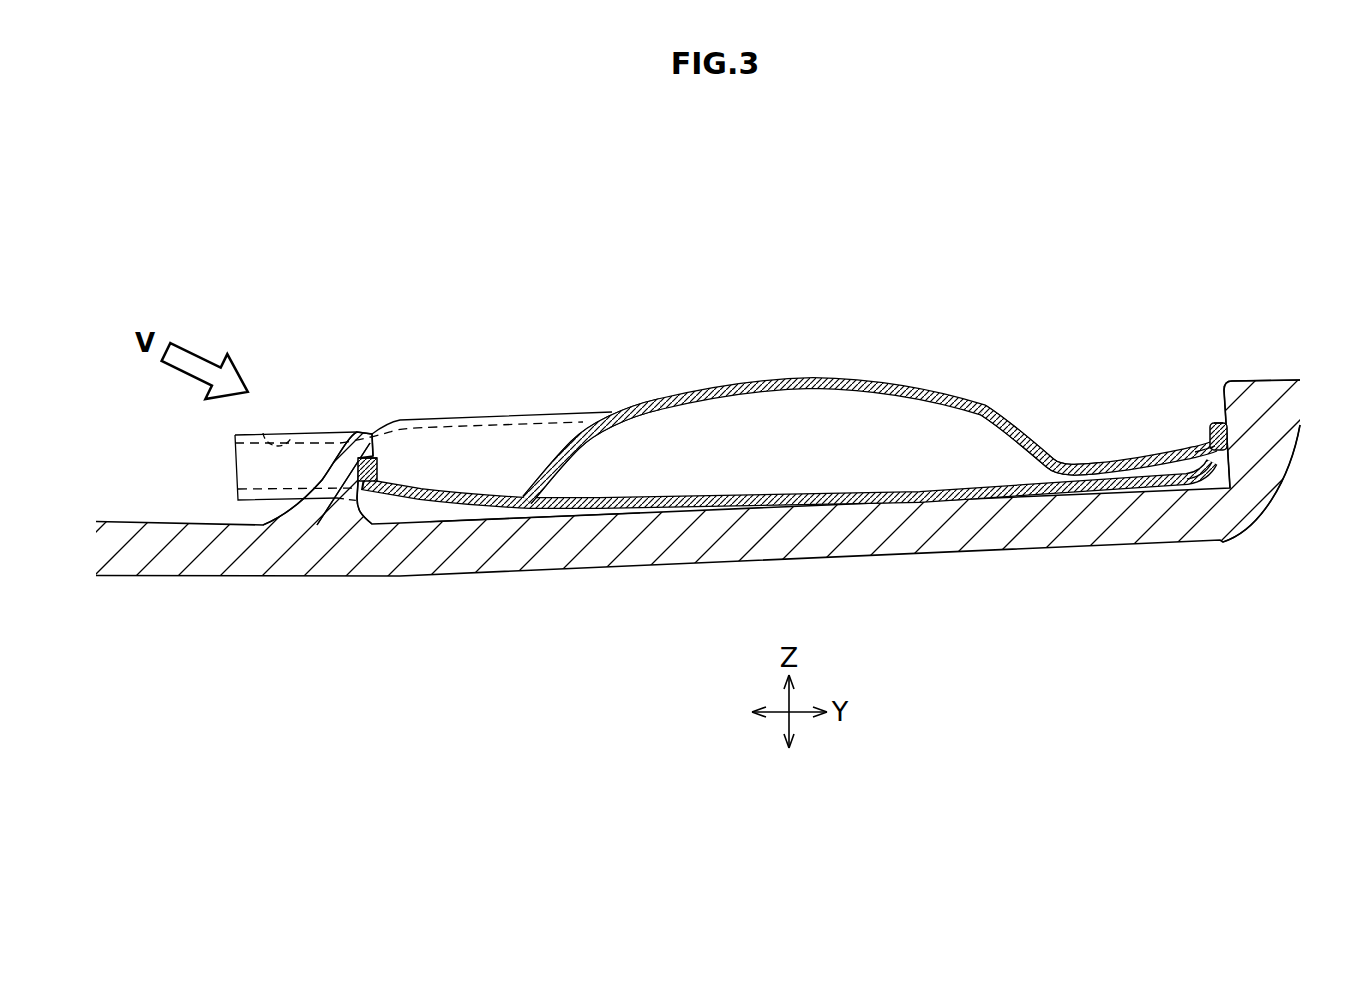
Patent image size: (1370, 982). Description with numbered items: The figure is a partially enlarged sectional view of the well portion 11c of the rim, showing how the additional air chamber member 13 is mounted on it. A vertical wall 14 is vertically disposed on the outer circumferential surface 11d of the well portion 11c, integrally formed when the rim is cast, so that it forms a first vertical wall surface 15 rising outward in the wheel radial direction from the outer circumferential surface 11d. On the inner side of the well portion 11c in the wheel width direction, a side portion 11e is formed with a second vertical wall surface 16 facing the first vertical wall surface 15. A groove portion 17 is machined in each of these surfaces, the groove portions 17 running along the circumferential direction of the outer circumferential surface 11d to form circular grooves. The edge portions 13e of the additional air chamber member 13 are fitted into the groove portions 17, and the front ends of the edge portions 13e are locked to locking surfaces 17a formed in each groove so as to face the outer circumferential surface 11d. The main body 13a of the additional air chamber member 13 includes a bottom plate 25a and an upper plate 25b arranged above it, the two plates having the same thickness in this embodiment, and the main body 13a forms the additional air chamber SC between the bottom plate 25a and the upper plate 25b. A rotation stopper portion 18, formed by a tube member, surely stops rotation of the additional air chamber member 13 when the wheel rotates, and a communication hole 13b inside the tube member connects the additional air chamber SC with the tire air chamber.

The well portion 11c is at (123, 520).
The outer circumferential surface 11d is at (512, 512).
The side portion 11e is at (1260, 455).
The additional air chamber member 13 is at (788, 454).
The main body 13a is at (788, 512).
The communication hole 13b is at (264, 433).
The edge portion 13e is at (447, 490).
The vertical wall 14 is at (333, 478).
The first vertical wall surface 15 is at (369, 503).
The second vertical wall surface 16 is at (1221, 467).
The groove portion 17 is at (378, 478).
The locking surface 17a is at (373, 458).
The rotation stopper portion 18 is at (273, 480).
The bottom plate 25a is at (842, 490).
The upper plate 25b is at (874, 378).
The additional air chamber SC is at (743, 447).